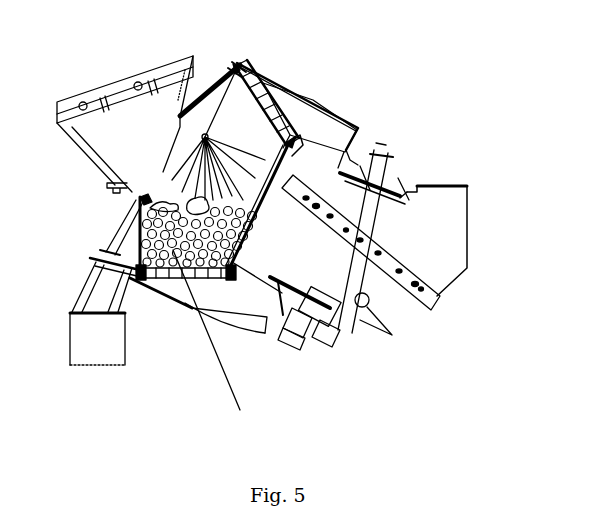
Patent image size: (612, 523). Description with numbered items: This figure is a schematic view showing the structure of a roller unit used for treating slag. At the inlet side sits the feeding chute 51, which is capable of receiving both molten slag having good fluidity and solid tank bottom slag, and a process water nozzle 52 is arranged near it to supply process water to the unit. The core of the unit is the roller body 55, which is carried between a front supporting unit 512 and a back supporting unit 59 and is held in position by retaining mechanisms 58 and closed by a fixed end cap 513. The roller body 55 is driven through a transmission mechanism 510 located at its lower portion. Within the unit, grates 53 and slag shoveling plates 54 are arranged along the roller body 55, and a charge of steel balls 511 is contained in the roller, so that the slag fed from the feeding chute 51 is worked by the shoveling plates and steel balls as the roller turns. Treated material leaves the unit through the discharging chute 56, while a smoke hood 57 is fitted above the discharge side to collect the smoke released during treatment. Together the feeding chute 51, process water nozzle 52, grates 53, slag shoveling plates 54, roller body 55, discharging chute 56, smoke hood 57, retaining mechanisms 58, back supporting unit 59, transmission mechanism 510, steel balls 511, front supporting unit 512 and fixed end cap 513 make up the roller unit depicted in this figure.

The feeding chute 51 is at (137, 112).
The process water nozzle 52 is at (180, 118).
The grates 53 is at (262, 103).
The slag shoveling plates 54 is at (302, 107).
The roller body 55 is at (330, 110).
The discharging chute 56 is at (380, 150).
The smoke hood 57 is at (432, 212).
The retaining mechanisms 58 is at (392, 335).
The back supporting unit 59 is at (366, 305).
The transmission mechanism 510 is at (297, 342).
The steel balls 511 is at (278, 412).
The front supporting unit 512 is at (125, 313).
The fixed end cap 513 is at (140, 197).